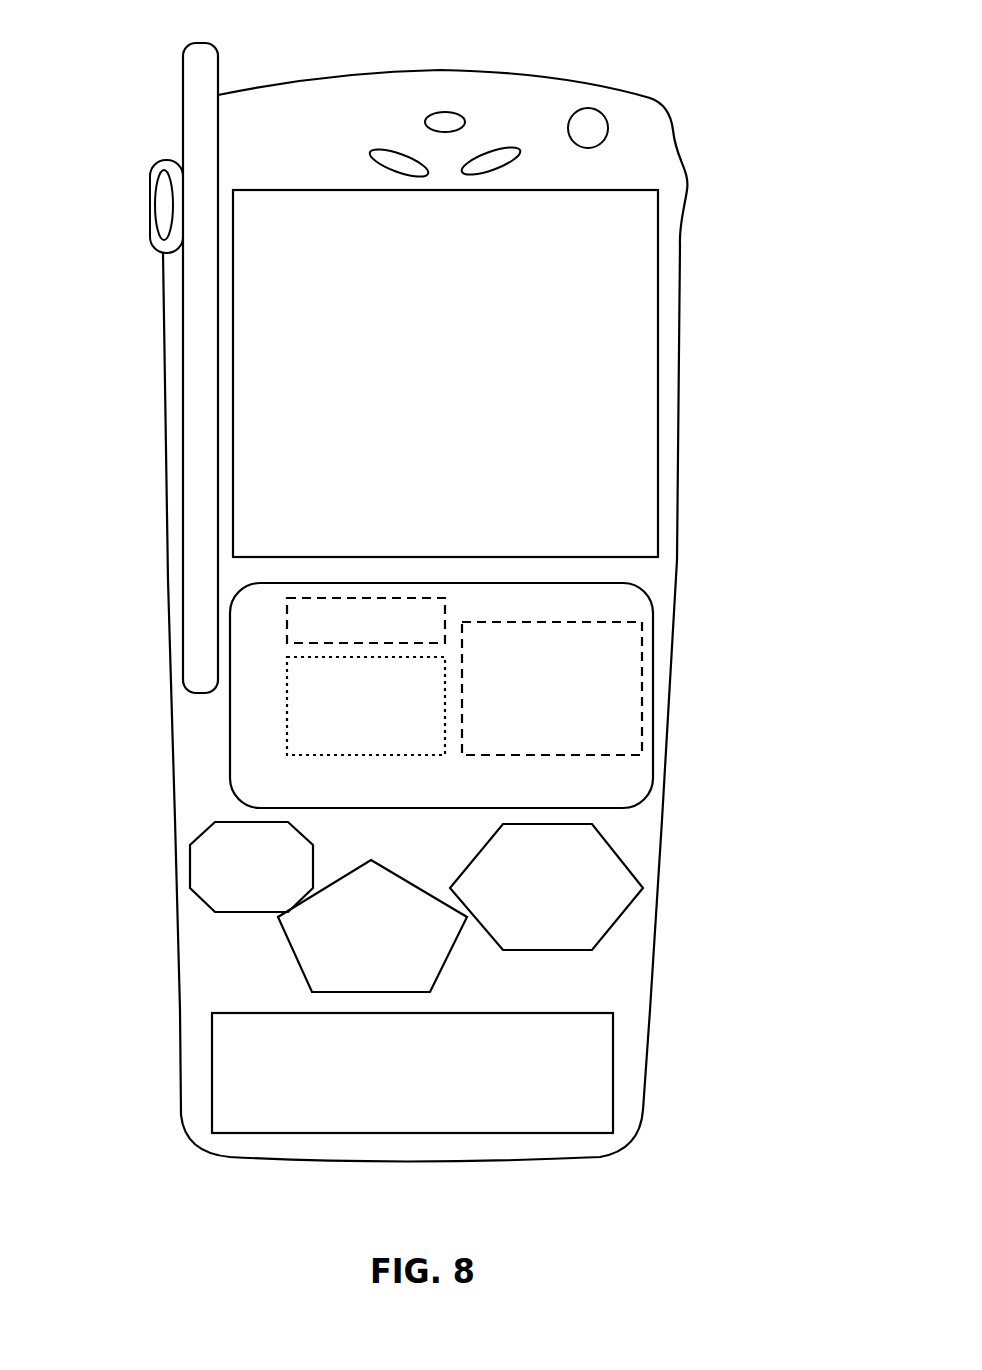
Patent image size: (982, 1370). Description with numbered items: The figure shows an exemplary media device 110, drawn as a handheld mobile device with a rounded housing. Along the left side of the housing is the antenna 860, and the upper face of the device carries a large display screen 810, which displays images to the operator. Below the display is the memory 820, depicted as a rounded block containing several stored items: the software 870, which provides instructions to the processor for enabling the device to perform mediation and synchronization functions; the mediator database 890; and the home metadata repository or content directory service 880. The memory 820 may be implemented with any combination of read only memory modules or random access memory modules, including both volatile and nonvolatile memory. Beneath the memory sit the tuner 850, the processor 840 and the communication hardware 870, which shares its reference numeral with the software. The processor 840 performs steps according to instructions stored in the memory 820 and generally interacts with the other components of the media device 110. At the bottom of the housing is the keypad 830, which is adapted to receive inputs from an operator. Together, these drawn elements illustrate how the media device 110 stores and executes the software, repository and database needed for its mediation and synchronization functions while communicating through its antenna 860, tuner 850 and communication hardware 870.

The media device 110 is at (443, 70).
The display screen 810 is at (633, 245).
The memory 820 is at (343, 798).
The keypad 830 is at (577, 1055).
The processor 840 is at (578, 853).
The tuner 850 is at (190, 878).
The antenna 860 is at (165, 250).
The communication hardware / software 870 is at (287, 613).
The home metadata repository or content directory service 880 is at (625, 660).
The mediator database 890 is at (287, 705).